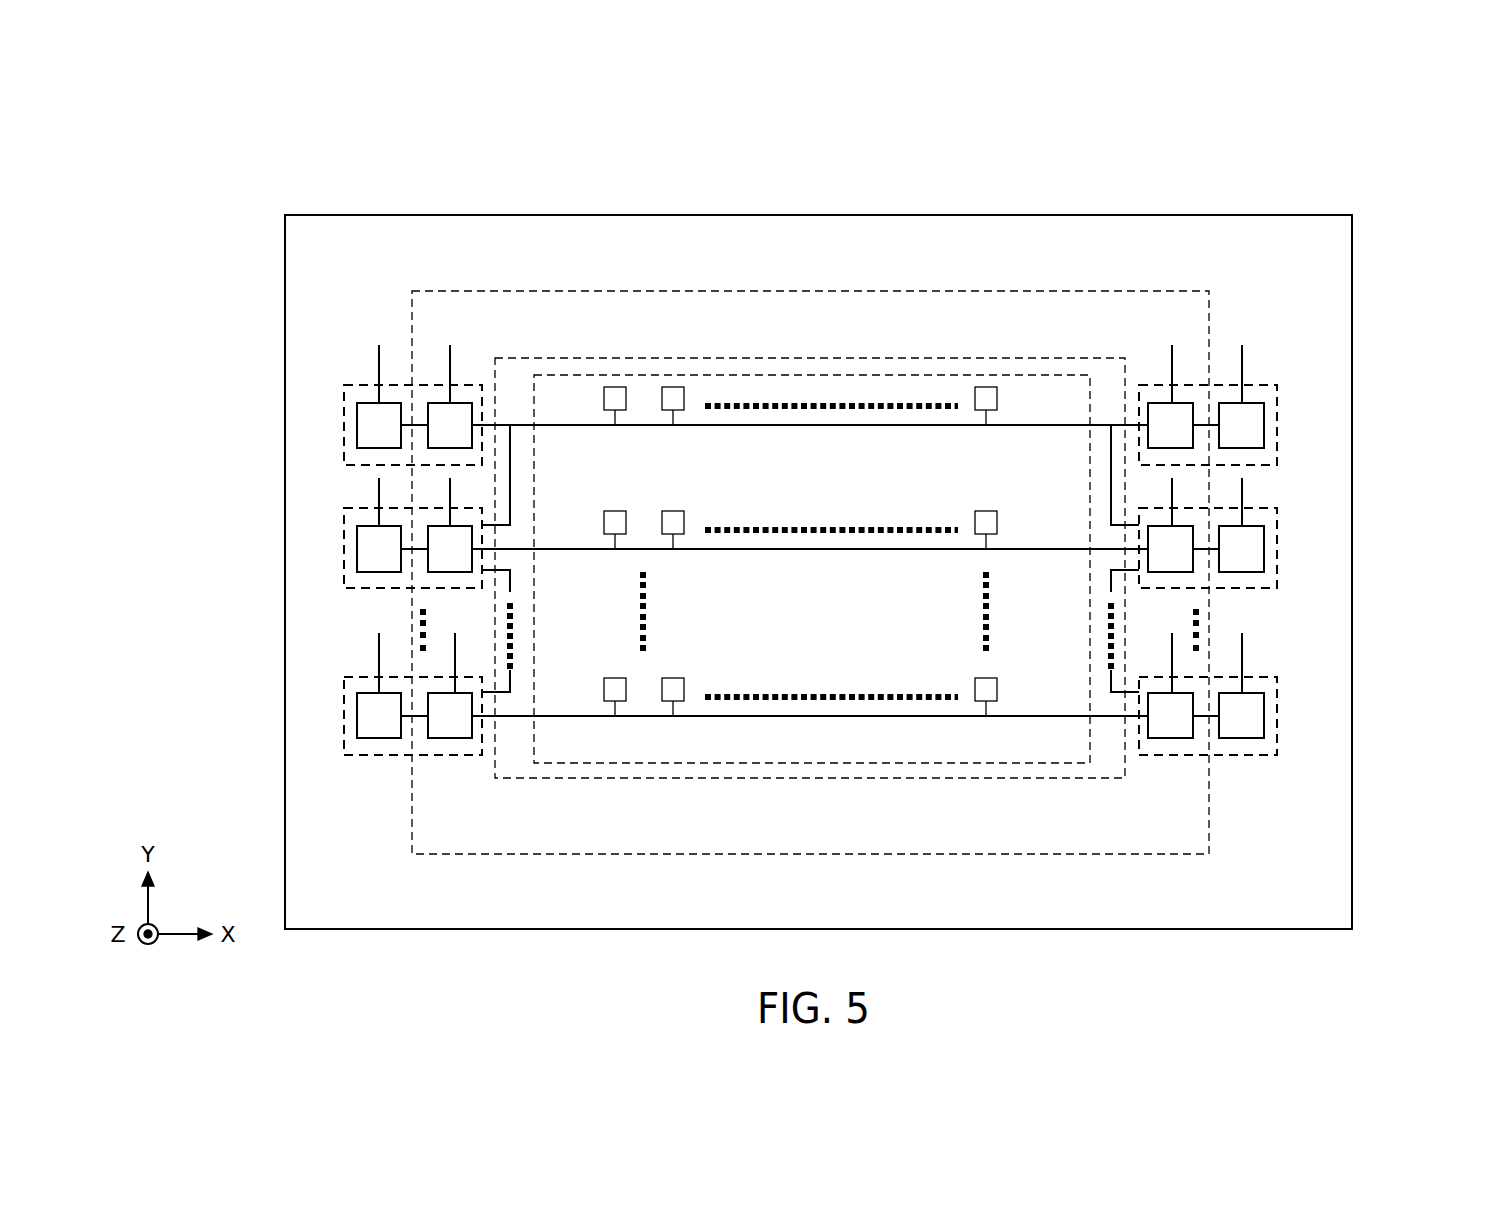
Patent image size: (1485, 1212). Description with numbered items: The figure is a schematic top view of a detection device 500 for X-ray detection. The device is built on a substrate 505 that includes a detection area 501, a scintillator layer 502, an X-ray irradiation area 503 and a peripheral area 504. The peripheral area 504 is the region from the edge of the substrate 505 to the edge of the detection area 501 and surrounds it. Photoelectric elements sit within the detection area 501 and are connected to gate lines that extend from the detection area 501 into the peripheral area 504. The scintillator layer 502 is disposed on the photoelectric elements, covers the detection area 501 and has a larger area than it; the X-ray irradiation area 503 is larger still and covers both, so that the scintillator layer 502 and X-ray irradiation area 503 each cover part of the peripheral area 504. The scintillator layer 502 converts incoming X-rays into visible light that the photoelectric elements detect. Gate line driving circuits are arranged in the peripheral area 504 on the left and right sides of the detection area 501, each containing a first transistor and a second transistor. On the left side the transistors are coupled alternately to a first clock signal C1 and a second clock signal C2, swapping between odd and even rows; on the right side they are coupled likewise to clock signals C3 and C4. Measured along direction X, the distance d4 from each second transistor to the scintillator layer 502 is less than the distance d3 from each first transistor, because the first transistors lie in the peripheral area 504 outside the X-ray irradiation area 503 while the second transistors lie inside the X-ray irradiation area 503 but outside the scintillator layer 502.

The detection device 500 is at (1381, 930).
The detection area 501 is at (996, 375).
The scintillator layer 502 is at (1076, 358).
The X-ray irradiation area 503 is at (1104, 291).
The peripheral area 504 is at (812, 360).
The substrate 505 is at (1305, 215).
The first clock signal C1 is at (378, 332).
The second clock signal C2 is at (449, 332).
The first clock signal C3 is at (1241, 332).
The second clock signal C4 is at (1171, 332).
The distance d3 is at (401, 470).
The distance d4 is at (471, 470).